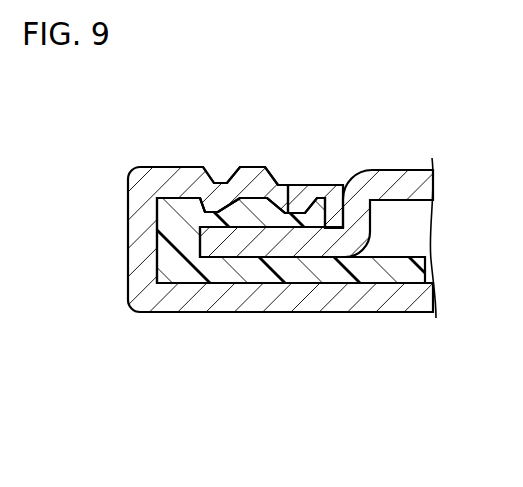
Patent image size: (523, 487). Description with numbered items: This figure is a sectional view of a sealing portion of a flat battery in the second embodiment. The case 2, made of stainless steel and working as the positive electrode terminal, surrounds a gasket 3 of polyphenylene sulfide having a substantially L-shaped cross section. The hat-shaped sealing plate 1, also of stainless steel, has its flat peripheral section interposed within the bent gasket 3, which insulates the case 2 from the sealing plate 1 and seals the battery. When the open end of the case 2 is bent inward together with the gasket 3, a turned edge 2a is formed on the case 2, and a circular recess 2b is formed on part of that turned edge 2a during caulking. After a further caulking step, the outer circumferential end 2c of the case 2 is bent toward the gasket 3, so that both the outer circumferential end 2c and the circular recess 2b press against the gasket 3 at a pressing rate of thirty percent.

The sealing plate 1 is at (395, 178).
The case 2 is at (217, 302).
The turned edge 2a is at (292, 141).
The circular recess 2b is at (217, 203).
The outer circumferential end 2c is at (302, 183).
The gasket 3 is at (352, 272).